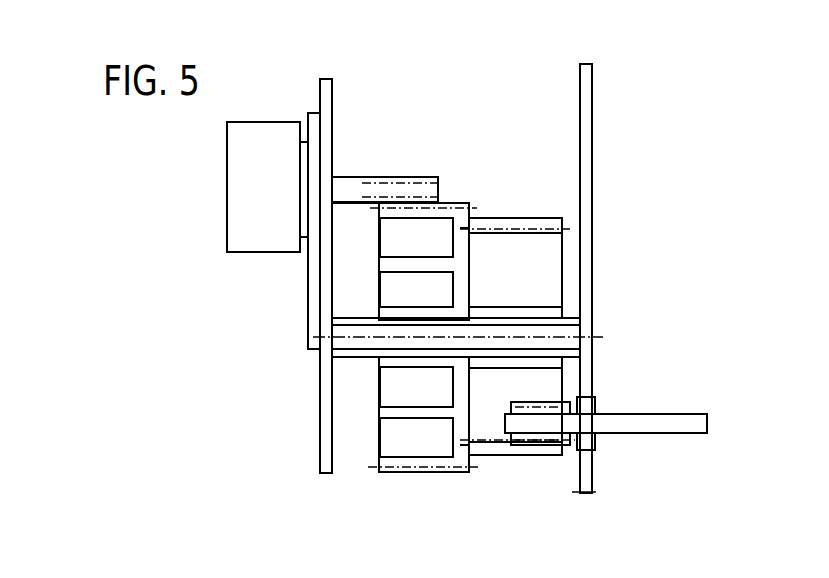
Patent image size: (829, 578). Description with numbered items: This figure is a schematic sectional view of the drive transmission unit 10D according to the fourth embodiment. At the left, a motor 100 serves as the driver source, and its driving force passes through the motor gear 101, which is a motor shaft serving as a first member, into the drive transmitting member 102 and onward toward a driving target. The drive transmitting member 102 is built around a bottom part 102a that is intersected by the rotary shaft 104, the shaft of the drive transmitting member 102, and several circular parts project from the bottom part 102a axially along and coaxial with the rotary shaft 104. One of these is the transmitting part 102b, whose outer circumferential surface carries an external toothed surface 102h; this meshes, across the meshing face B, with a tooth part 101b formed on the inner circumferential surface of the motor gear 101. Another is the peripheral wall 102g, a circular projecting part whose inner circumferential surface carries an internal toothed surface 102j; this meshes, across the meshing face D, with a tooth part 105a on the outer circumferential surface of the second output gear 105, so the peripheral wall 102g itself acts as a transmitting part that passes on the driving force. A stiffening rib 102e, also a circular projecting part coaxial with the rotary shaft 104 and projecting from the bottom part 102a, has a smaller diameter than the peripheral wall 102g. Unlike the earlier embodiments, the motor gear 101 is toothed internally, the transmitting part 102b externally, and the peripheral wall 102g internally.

The motor 100 is at (263, 122).
The drive transmission unit 10D is at (604, 89).
The motor gear 101 is at (351, 198).
The tooth part 101b is at (383, 198).
The meshing face B is at (420, 205).
The external toothed surface 102h is at (458, 206).
The drive transmitting member 102 is at (469, 477).
The bottom part 102a is at (470, 247).
The transmitting part 102b is at (397, 468).
The stiffening rib 102e is at (386, 421).
The peripheral wall 102g is at (522, 448).
The internal toothed surface 102j is at (489, 446).
The rotary shaft 104 is at (548, 346).
The second output gear 105 is at (652, 428).
The tooth part 105a is at (518, 435).
The meshing face D is at (543, 447).